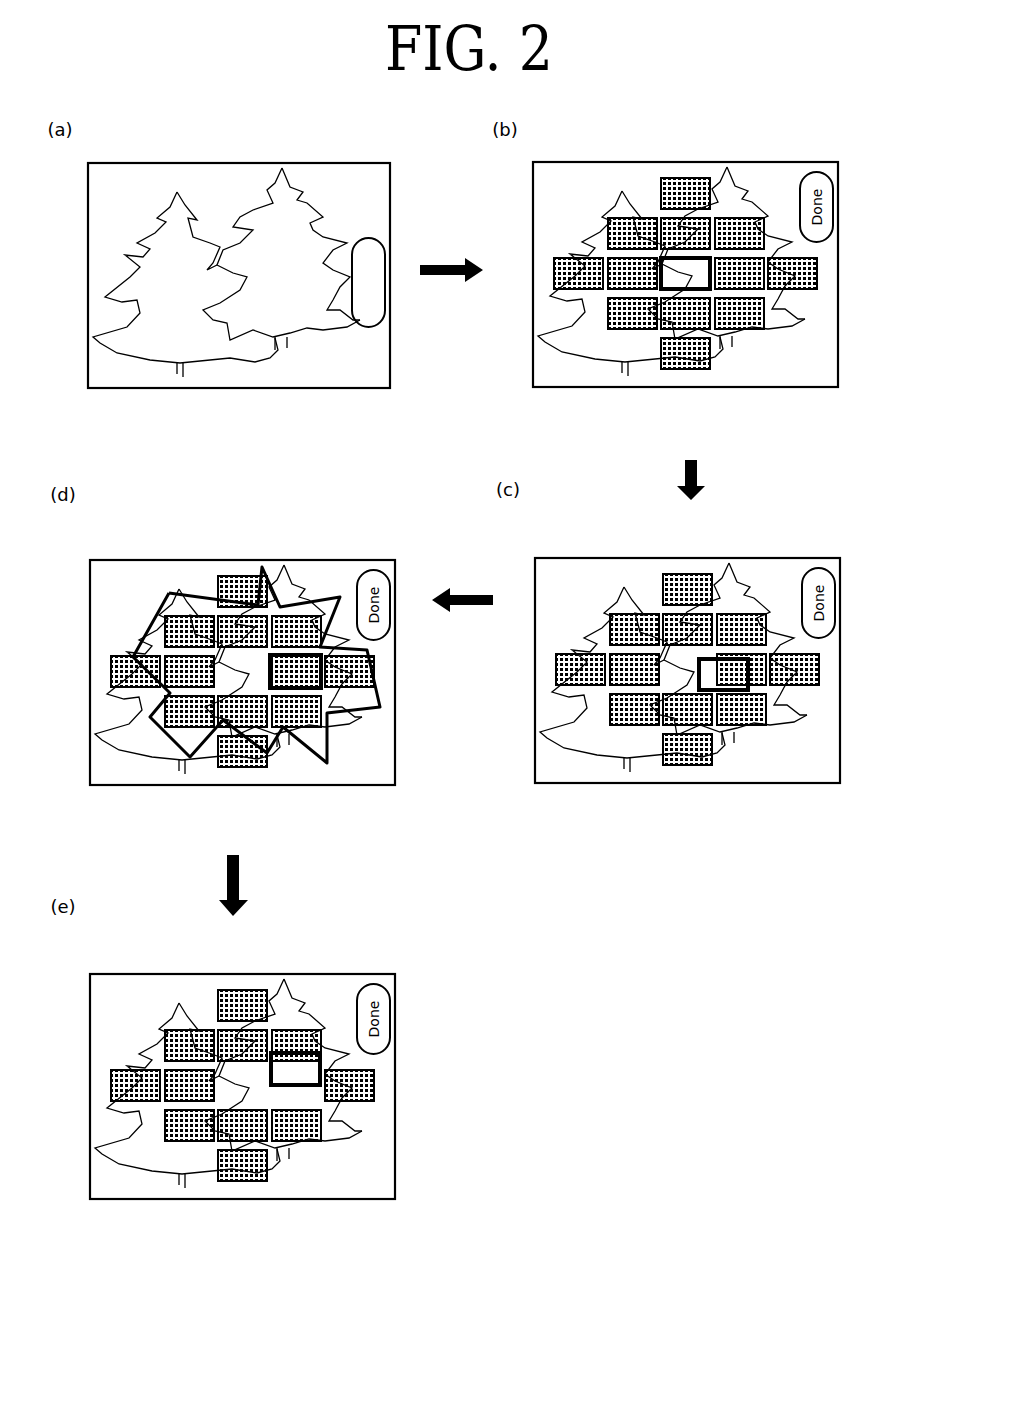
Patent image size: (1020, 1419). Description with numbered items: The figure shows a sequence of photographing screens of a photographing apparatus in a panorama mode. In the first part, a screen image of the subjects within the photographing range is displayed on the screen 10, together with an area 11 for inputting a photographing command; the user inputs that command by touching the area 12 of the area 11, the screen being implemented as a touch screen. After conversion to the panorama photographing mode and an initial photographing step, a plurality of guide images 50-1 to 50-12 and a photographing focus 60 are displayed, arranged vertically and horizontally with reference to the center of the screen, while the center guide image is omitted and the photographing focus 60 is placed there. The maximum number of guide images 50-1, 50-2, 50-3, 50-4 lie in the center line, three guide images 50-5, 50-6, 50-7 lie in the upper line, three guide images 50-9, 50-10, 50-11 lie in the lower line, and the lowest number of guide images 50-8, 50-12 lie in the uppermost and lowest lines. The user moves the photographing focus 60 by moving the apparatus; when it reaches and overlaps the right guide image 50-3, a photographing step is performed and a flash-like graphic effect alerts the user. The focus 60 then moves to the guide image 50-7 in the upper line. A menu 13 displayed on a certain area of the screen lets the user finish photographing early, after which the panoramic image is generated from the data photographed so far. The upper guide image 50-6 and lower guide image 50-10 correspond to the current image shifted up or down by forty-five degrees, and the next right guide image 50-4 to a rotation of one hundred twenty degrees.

The screen 10 is at (464, 658).
The area to input a photographing command 11 is at (358, 223).
The area 12 is at (375, 211).
The menu 13 is at (596, 585).
The guide image 50-1 is at (321, 686).
The guide image 50-2 is at (344, 662).
The right guide image 50-3 is at (584, 460).
The next right guide image 50-4 is at (611, 679).
The guide image 50-5 is at (397, 588).
The upper guide image 50-6 is at (450, 588).
The guide image 50-7 is at (524, 587).
The guide image 50-8 is at (471, 566).
The guide image 50-9 is at (396, 772).
The lower guide image 50-10 is at (447, 772).
The guide image 50-11 is at (537, 772).
The guide image 50-12 is at (478, 800).
The photographing focus 60 is at (593, 671).